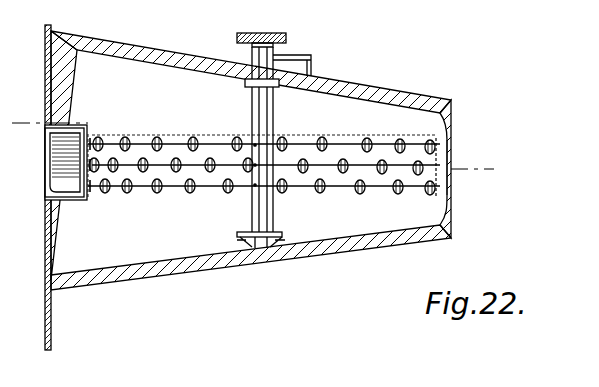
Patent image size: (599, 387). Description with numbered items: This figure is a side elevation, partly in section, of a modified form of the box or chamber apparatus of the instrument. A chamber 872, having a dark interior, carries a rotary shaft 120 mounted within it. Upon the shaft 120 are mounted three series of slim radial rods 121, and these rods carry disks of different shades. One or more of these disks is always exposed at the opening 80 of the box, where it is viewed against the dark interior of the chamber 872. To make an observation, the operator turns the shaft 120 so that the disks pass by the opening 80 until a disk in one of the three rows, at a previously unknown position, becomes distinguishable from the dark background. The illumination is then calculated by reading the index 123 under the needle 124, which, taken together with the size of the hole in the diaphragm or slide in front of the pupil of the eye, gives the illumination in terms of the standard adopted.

The chamber 872 is at (253, 187).
The rotary shaft 120 is at (256, 52).
The needle 124 is at (307, 52).
The index 123 is at (313, 63).
The slim radial rods 121 is at (343, 188).
The opening 80 is at (467, 167).